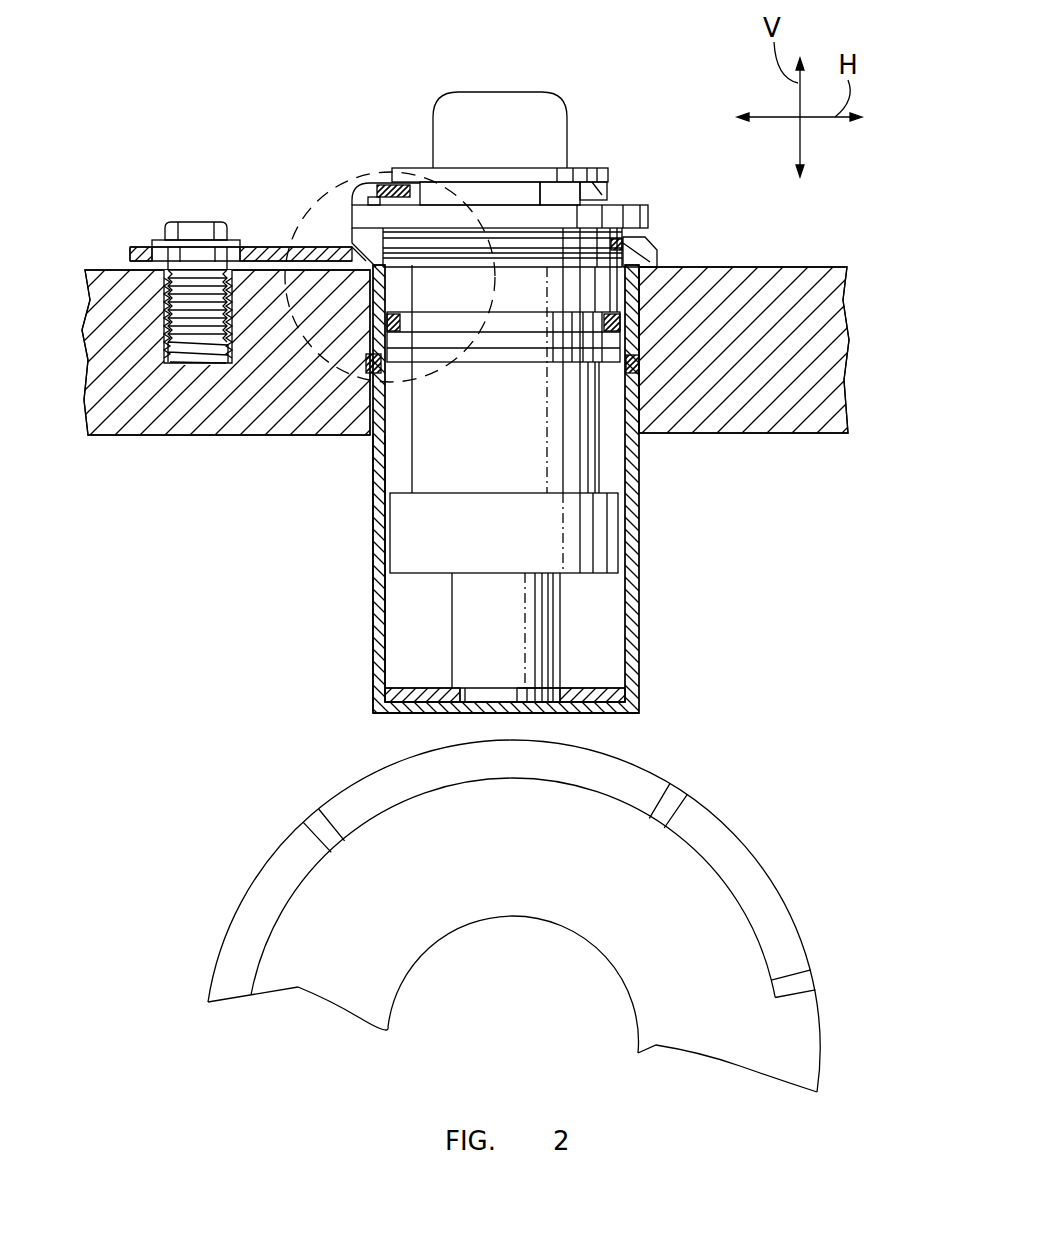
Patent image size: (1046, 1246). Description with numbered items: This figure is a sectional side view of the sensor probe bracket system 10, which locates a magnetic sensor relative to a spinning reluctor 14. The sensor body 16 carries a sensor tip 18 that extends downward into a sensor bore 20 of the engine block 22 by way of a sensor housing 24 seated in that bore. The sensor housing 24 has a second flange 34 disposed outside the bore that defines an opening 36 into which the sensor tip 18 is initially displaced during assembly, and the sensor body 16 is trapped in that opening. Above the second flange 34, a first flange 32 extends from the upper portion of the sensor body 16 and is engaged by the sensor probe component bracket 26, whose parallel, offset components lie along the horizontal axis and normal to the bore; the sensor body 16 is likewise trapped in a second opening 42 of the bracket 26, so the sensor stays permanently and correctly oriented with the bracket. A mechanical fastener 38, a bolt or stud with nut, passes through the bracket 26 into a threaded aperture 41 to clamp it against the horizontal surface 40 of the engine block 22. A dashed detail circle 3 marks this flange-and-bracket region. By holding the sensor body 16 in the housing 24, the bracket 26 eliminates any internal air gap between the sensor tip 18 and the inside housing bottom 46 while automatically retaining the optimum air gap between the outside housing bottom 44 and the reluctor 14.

The sensor probe bracket system 10 is at (235, 119).
The reluctor 14 is at (725, 820).
The sensor body 16 is at (590, 470).
The sensor tip 18 is at (535, 702).
The sensor bore 20 is at (373, 430).
The engine block 22 is at (808, 267).
The sensor housing 24 is at (373, 560).
The sensor probe component bracket 26 is at (266, 248).
The first flange 32 is at (635, 205).
The second flange 34 is at (658, 249).
The opening 36 is at (645, 244).
The mechanical fastener 38 is at (185, 222).
The horizontal surface 40 is at (125, 269).
The threaded aperture 41 is at (172, 350).
The second opening 42 is at (420, 168).
The outside housing bottom 44 is at (403, 713).
The inside housing bottom 46 is at (627, 690).
The detail view indicator 3 is at (328, 370).